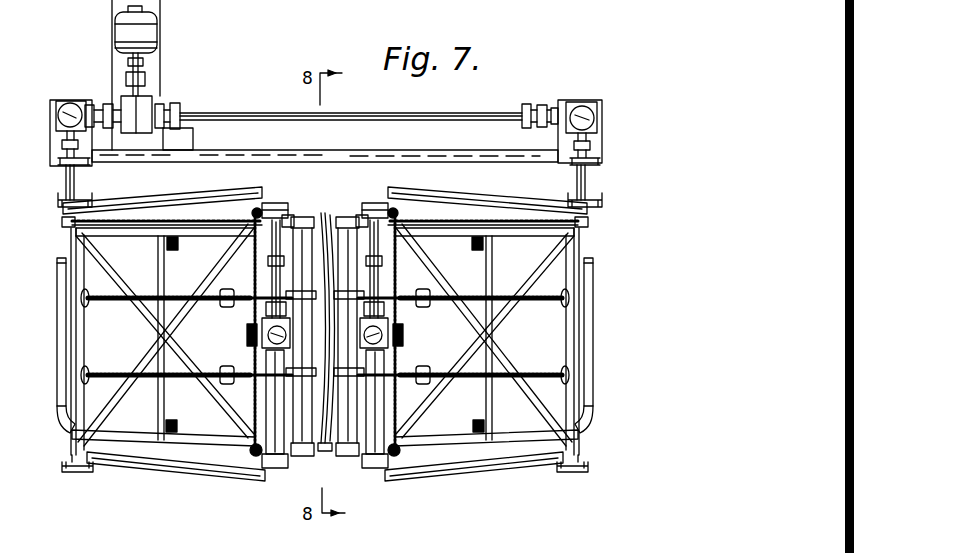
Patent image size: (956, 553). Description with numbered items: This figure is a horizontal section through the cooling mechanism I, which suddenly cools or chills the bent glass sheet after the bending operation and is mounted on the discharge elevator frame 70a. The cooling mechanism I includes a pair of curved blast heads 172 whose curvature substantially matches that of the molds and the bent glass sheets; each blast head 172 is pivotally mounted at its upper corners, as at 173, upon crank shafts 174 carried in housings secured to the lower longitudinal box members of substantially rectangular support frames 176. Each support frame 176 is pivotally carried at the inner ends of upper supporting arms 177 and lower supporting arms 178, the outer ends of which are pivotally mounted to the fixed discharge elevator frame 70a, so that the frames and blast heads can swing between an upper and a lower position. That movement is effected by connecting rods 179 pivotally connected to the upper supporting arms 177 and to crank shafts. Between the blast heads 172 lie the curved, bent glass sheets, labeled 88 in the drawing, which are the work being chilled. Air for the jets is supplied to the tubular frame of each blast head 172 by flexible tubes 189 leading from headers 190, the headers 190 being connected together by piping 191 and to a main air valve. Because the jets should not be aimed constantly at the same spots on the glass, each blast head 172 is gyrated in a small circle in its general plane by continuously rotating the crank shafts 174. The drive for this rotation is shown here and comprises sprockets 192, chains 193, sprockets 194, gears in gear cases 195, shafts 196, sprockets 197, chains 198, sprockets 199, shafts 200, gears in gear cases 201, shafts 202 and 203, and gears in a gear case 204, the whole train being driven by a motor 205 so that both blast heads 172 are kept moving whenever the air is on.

The motor 205 is at (146, 33).
The gear case 204 is at (152, 101).
The shaft 203 is at (249, 103).
The shaft 202 is at (100, 104).
The gear case 201 is at (56, 111).
The shaft 200 is at (66, 182).
The sprocket 199 is at (61, 225).
The chain 198 is at (200, 221).
The sprocket 197 is at (268, 203).
The lower supporting arm 178 is at (166, 206).
The upper supporting arm 177 is at (140, 237).
The connecting rod 179 is at (179, 244).
The flexible tube 189 is at (115, 303).
The header 190 is at (57, 318).
The piping 191 is at (58, 420).
The sprocket 192 is at (396, 211).
The chain 193 is at (254, 270).
The sprocket 194 is at (248, 336).
The gear case 195 is at (290, 331).
The shaft 196 is at (270, 306).
The support frame 176 is at (271, 406).
The crank shaft 174 is at (296, 458).
The pivotal mounting 173 is at (303, 215).
The blast head 172 is at (326, 224).
The strip end 88 is at (325, 452).
The discharge elevator frame 70a is at (578, 473).
The cooling mechanism I is at (608, 271).